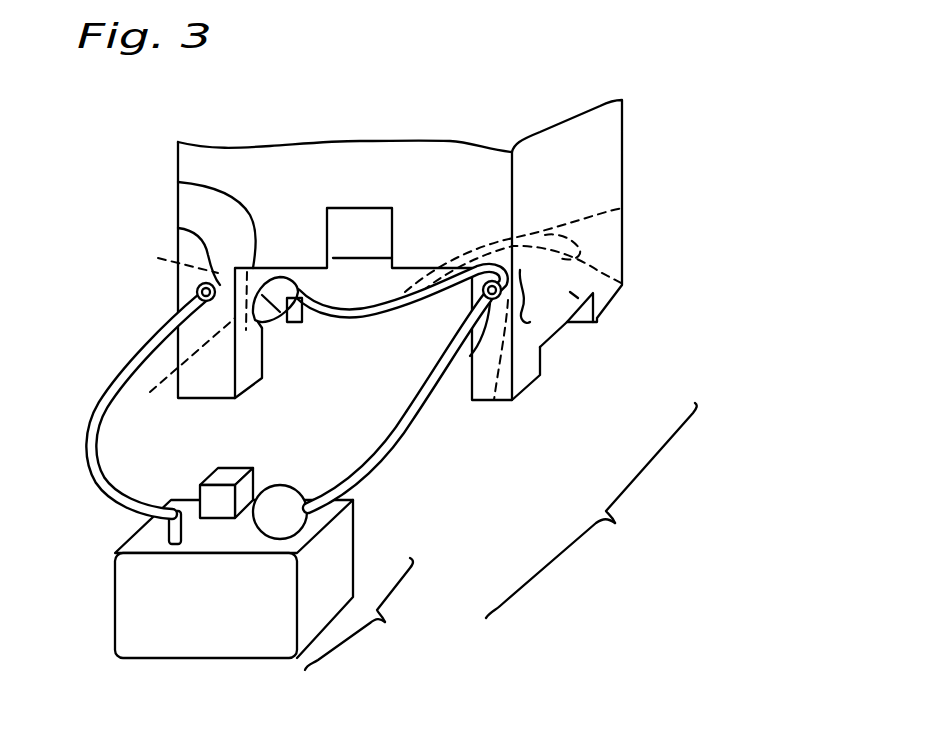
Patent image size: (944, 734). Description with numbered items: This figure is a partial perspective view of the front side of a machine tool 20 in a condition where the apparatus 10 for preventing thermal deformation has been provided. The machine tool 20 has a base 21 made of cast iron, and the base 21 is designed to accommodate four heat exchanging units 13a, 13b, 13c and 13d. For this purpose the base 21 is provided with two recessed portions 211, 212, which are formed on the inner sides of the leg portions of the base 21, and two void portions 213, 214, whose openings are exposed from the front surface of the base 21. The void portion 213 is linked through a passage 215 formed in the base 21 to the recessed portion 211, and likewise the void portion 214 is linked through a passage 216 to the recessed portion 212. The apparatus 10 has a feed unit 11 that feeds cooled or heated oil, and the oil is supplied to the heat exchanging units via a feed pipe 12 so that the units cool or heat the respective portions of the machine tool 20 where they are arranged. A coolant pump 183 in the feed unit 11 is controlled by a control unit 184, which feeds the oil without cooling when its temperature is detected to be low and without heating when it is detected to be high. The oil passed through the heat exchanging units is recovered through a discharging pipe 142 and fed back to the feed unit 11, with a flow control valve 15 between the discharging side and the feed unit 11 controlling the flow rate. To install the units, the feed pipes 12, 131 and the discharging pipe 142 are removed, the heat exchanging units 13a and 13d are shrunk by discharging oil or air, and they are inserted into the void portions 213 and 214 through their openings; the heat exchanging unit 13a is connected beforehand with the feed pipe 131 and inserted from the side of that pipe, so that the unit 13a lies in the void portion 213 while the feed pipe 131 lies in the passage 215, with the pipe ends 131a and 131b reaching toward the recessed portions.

The apparatus for preventing thermal deformation 10 is at (591, 510).
The feed unit 11 is at (264, 585).
The feed pipe 12 is at (383, 468).
The heat exchanging unit 13a is at (447, 301).
The heat exchanging unit 13b is at (568, 322).
The heat exchanging unit 13c is at (277, 328).
The heat exchanging unit 13d is at (178, 228).
The flow control valve 15 is at (169, 537).
The machine tool 20 is at (732, 133).
The base 21 is at (605, 152).
The feed pipe 131 is at (494, 400).
The tube end 131a is at (623, 208).
The tube end 131b is at (178, 182).
The discharging pipe 142 is at (98, 389).
The coolant pump 183 is at (297, 486).
The control unit 184 is at (220, 472).
The recessed portion 211 is at (625, 286).
The recessed portion 212 is at (156, 251).
The void portion 213 is at (470, 356).
The void portion 214 is at (197, 291).
The passage 215 is at (540, 368).
The passage 216 is at (178, 373).